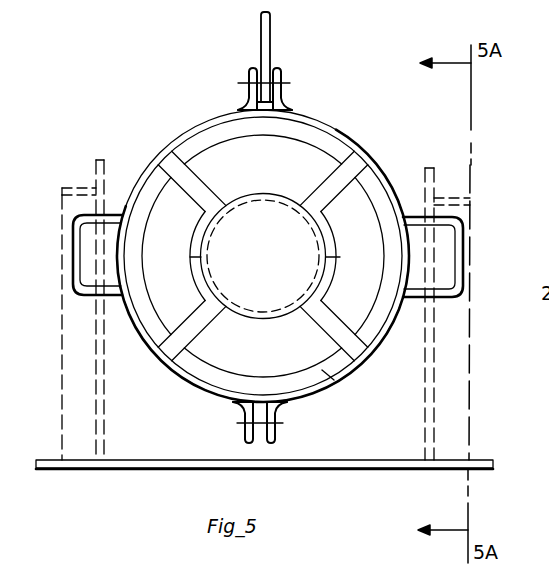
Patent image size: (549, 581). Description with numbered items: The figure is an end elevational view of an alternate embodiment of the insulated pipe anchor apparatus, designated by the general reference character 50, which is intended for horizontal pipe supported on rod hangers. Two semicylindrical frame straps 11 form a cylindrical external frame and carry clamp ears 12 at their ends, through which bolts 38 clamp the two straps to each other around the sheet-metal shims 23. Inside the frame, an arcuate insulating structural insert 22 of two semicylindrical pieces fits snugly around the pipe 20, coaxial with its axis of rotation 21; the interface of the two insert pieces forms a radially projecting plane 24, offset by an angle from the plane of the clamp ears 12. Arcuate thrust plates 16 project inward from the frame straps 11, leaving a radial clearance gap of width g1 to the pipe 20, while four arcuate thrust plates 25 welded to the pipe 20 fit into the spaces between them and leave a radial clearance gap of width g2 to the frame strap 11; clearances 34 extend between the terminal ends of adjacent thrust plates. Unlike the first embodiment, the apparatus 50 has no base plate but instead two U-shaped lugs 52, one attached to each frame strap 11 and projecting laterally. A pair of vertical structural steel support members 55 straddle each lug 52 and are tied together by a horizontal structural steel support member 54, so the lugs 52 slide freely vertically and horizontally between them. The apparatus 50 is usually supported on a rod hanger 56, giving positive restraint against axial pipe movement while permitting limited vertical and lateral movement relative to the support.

The frame strap 11 is at (181, 138).
The clamp ear 12 is at (252, 70).
The thrust plate 16 is at (178, 220).
The pipe 20 is at (259, 316).
The axis of rotation 21 is at (262, 256).
The insulating structural insert 22 is at (334, 152).
The shim 23 is at (328, 132).
The plane 24 is at (336, 262).
The thrust plate 25 is at (262, 172).
The clearance 34 is at (178, 170).
The bolt 38 is at (290, 84).
The insulated pipe anchor apparatus 50 is at (150, 364).
The U-shaped lug 52 is at (80, 298).
The horizontal structural steel support member 54 is at (68, 186).
The vertical structural steel support member 55 is at (93, 412).
The rod hanger 56 is at (270, 48).
The radial clearance gap width g1 is at (178, 242).
The radial clearance gap width g2 is at (345, 408).